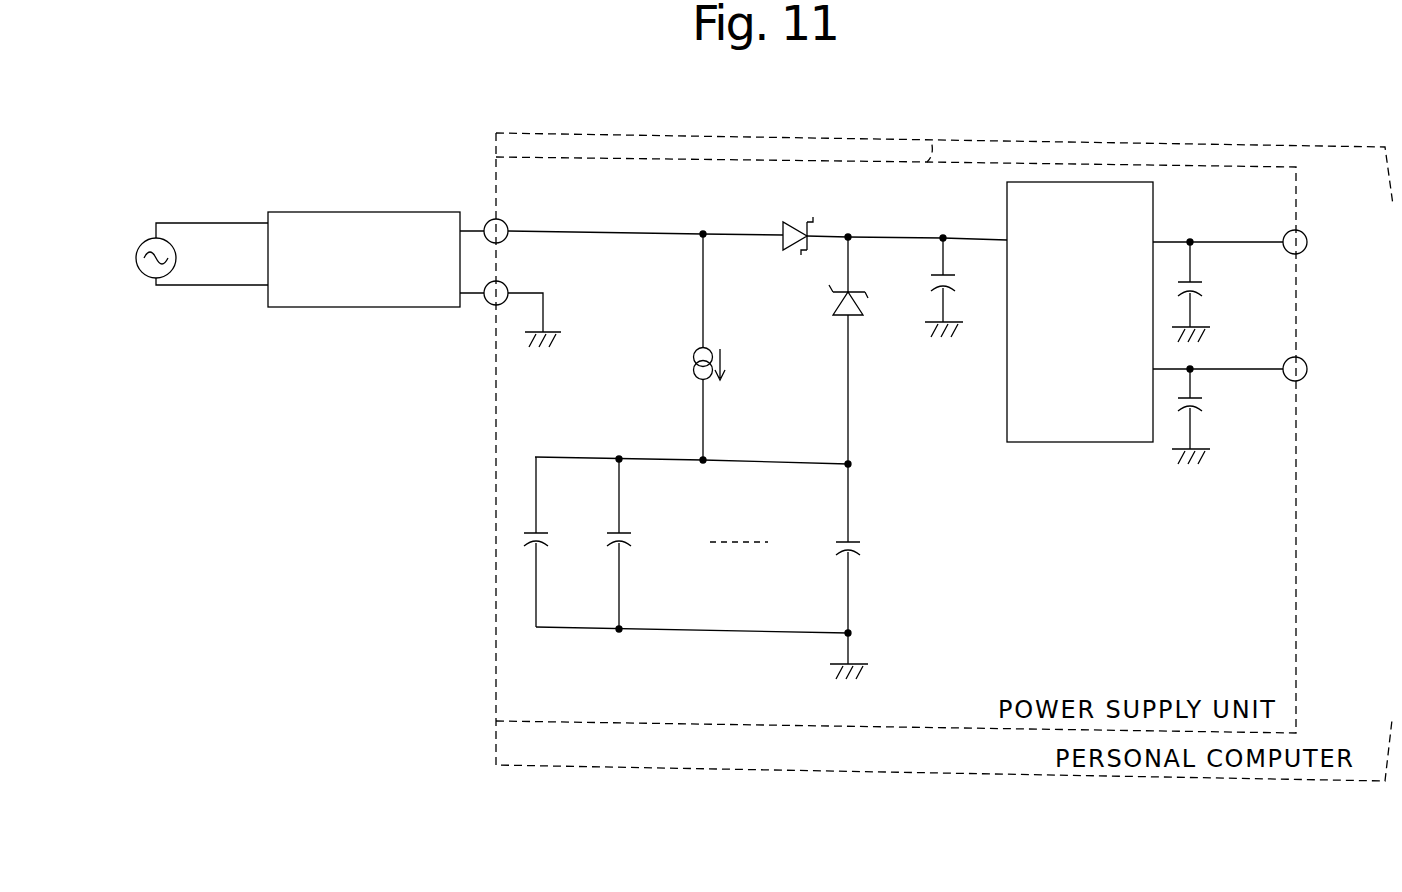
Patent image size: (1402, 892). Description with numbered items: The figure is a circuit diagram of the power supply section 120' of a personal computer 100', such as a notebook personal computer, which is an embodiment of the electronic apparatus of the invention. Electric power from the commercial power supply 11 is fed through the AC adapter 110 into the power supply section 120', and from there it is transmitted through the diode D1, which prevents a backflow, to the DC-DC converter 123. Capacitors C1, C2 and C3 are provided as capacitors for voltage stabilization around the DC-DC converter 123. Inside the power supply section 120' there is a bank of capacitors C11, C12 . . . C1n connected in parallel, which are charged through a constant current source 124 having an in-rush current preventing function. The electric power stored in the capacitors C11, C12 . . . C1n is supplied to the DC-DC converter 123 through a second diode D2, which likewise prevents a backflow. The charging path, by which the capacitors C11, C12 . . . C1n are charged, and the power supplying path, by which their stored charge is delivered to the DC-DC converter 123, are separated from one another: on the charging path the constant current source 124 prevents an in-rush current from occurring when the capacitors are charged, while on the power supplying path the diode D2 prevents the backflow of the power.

The commercial power supply 11 is at (140, 244).
The AC adapter 110 is at (358, 212).
The personal computer 100' is at (944, 434).
The power supply section 120' is at (896, 418).
The DC-DC converter 123 is at (1153, 216).
The constant current source 124 is at (694, 356).
The diode D1 is at (795, 225).
The diode D2 is at (831, 350).
The capacitor C1 is at (958, 287).
The capacitor C2 is at (1212, 292).
The capacitor C3 is at (1212, 416).
The capacitor C11 is at (560, 542).
The capacitor C12 is at (643, 544).
The capacitor C1n is at (826, 571).